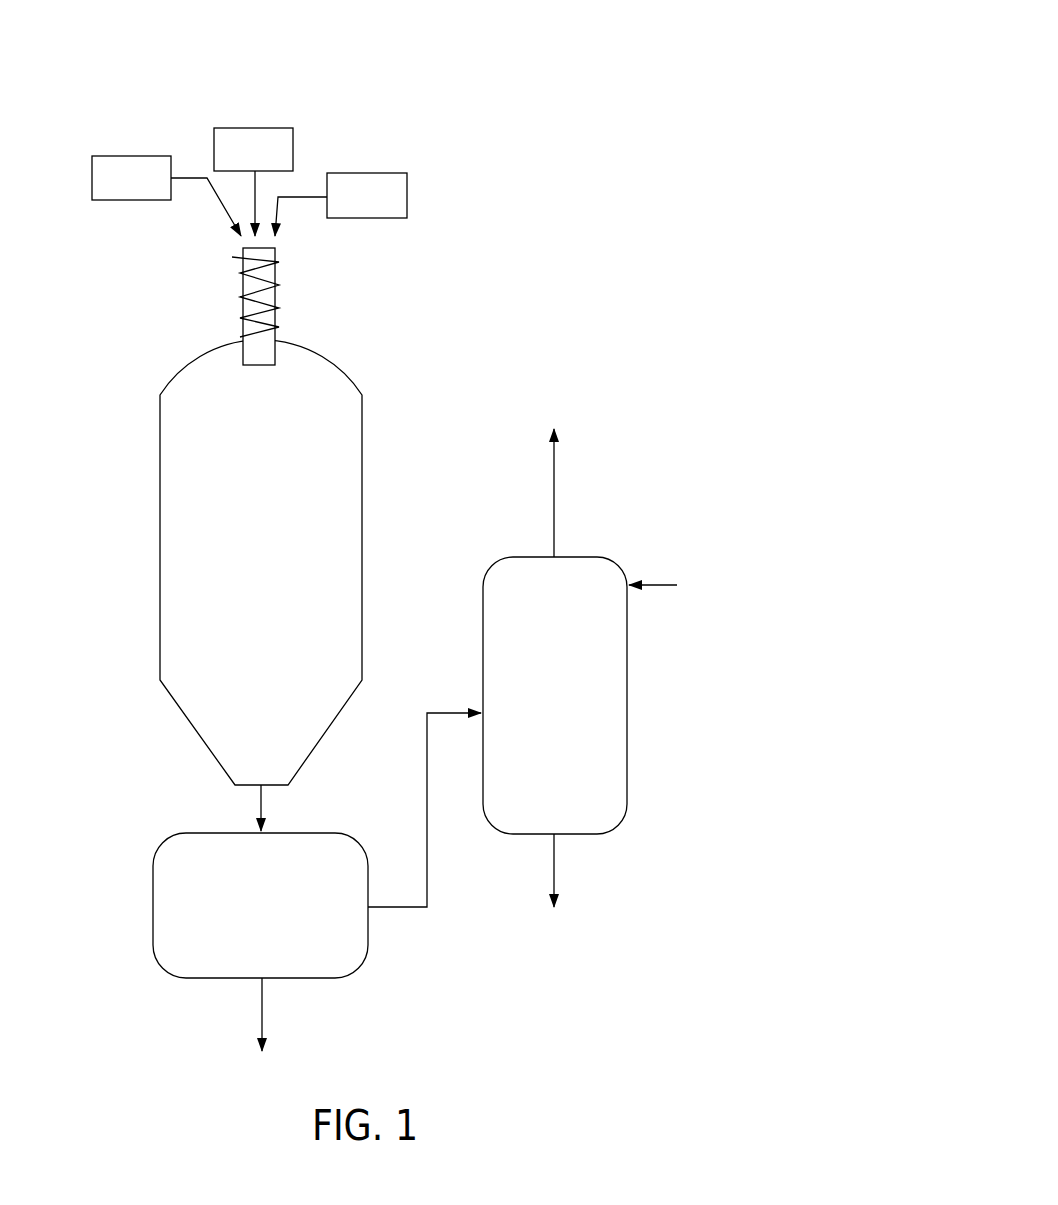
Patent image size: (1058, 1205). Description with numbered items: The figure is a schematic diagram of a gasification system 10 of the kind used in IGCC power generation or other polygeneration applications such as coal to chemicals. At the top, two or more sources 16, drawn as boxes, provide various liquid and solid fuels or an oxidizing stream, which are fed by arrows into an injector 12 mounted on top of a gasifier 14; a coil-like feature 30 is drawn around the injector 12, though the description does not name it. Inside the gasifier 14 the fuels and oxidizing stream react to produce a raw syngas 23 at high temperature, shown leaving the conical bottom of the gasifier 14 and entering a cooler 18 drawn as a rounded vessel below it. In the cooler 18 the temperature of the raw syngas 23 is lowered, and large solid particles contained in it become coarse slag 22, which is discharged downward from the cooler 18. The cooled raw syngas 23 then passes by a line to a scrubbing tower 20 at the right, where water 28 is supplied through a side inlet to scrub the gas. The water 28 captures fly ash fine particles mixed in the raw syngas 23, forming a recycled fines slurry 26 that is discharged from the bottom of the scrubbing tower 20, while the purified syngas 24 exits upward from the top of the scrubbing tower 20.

The gasification system 10 is at (626, 70).
The injector 12 is at (280, 293).
The gasifier 14 is at (362, 470).
The sources 16 is at (130, 157).
The cooler 18 is at (153, 907).
The scrubbing tower 20 is at (627, 737).
The coarse slag 22 is at (262, 1017).
The raw syngas 23 is at (260, 812).
The purified syngas 24 is at (555, 490).
The recycled fines slurry 26 is at (554, 870).
The water 28 is at (668, 587).
The heating coil 30 is at (240, 273).